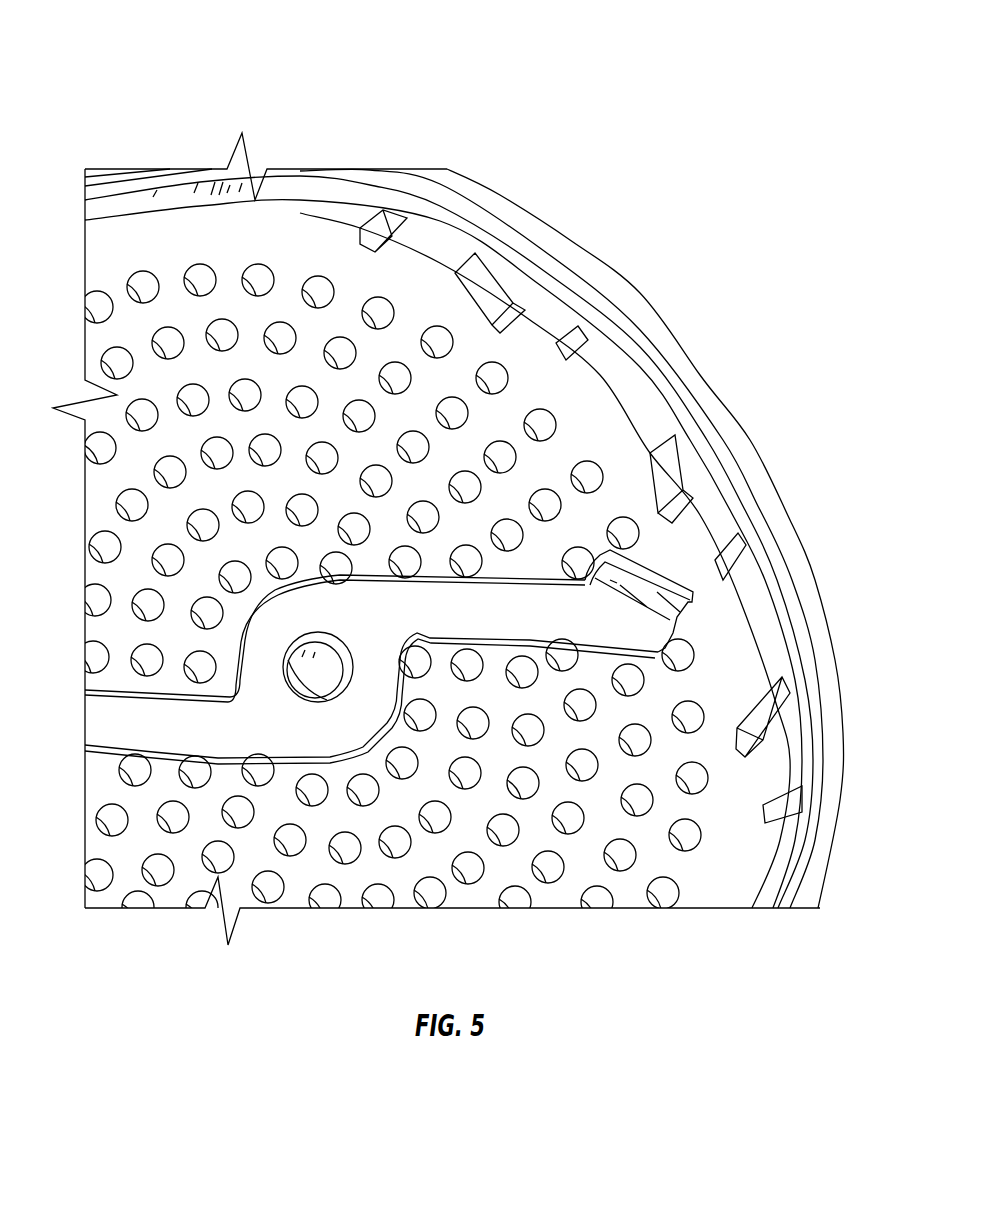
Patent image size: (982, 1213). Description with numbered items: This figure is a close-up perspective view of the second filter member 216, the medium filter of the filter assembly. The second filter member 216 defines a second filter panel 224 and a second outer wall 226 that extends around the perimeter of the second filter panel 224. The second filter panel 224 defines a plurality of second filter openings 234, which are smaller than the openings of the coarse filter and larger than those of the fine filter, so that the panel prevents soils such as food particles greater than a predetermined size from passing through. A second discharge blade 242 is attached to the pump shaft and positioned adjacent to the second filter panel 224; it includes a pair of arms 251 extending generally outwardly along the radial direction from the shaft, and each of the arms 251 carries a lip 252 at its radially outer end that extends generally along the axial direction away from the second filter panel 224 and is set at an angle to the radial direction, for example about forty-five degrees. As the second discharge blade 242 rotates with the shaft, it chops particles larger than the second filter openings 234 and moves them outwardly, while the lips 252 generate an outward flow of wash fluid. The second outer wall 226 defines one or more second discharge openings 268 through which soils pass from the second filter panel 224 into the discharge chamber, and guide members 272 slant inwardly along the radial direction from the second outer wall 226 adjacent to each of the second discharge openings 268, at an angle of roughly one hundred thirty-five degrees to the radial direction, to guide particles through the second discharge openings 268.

The second filter member 216 is at (97, 86).
The second filter panel 224 is at (348, 318).
The second outer wall 226 is at (464, 190).
The second filter openings 234 is at (264, 266).
The second discharge blade 242 is at (488, 592).
The arms 251 is at (530, 610).
The lip 252 is at (738, 598).
The second discharge openings 268 is at (541, 343).
The guide members 272 is at (492, 305).